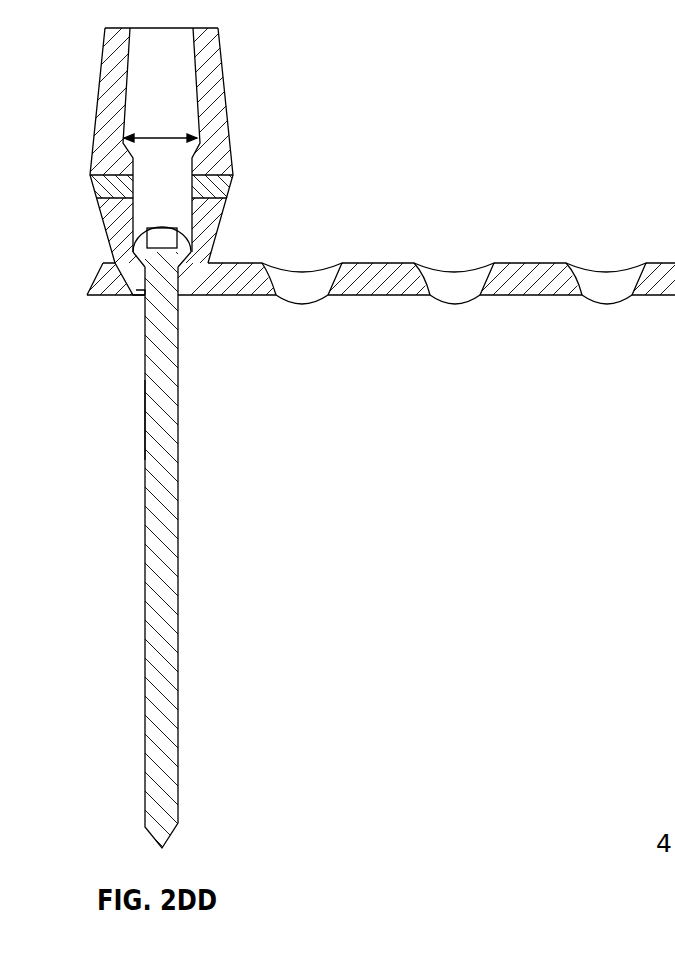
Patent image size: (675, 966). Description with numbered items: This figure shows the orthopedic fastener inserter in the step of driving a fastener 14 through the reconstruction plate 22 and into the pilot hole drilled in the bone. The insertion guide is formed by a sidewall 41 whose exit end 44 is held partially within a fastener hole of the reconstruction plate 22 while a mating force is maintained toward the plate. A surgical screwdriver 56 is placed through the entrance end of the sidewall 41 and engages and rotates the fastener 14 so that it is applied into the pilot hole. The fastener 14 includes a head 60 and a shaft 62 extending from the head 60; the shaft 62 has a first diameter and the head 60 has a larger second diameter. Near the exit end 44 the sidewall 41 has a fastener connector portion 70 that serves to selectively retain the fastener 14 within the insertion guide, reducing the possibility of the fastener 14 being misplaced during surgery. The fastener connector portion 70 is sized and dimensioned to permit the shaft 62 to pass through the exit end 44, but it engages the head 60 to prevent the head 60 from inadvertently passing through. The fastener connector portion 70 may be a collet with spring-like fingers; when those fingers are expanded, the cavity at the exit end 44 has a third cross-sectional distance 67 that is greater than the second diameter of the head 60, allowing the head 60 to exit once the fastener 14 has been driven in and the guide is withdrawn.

The fastener 14 is at (177, 470).
The reconstruction plate 22 is at (390, 262).
The sidewall 41 is at (228, 112).
The exit end 44 is at (142, 292).
The surgical screwdriver 56 is at (168, 90).
The head 60 is at (134, 293).
The shaft 62 is at (145, 415).
The third cross-sectional distance 67 is at (171, 143).
The fastener connector portion 70 is at (233, 168).